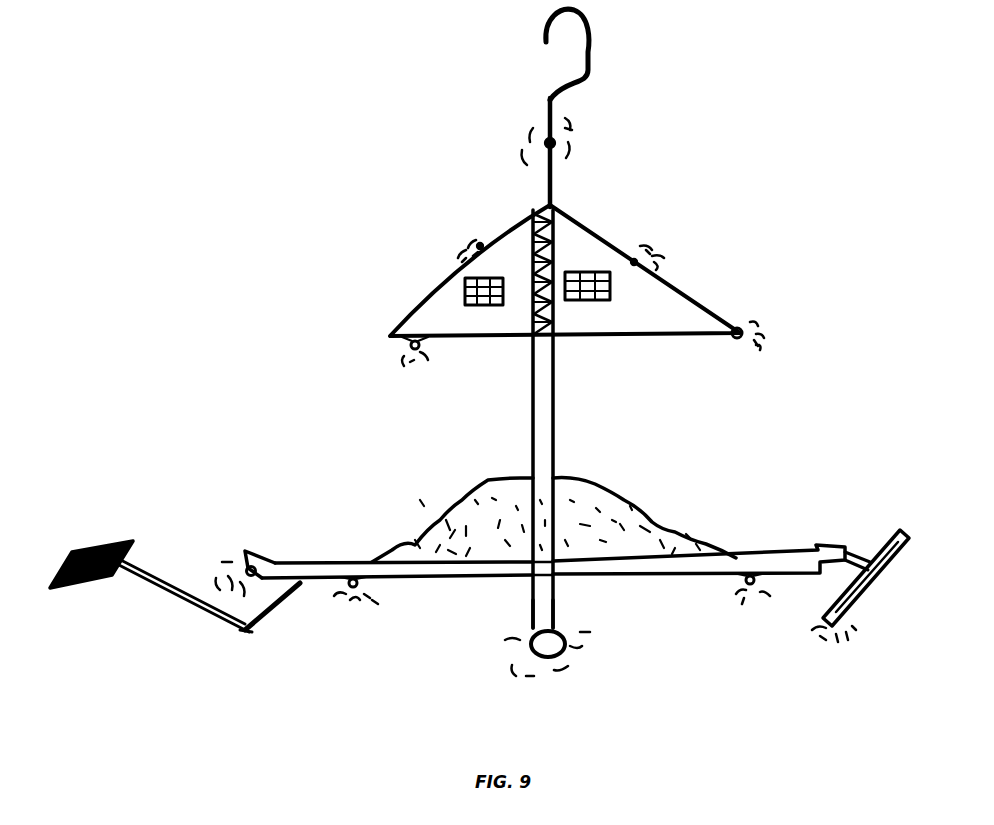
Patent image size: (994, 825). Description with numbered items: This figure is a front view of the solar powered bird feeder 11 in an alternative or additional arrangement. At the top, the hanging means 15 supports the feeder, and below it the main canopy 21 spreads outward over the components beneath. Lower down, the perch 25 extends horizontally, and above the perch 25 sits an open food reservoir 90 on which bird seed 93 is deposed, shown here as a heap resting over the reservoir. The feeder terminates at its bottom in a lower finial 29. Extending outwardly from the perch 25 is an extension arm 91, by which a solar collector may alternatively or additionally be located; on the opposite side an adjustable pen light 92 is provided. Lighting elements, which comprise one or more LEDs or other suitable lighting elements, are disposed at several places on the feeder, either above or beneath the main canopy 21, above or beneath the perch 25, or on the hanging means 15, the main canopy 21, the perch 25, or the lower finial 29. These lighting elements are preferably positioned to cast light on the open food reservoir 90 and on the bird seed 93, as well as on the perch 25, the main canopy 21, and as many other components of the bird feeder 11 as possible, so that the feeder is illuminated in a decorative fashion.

The bird feeder 11 is at (250, 194).
The hanging means 15 is at (590, 45).
The main canopy 21 is at (582, 222).
The perch 25 is at (342, 560).
The lower finial 29 is at (531, 620).
The open food reservoir 90 is at (503, 565).
The extension arm 91 is at (245, 636).
The adjustable pen light 92 is at (890, 532).
The bird seed 93 is at (592, 482).